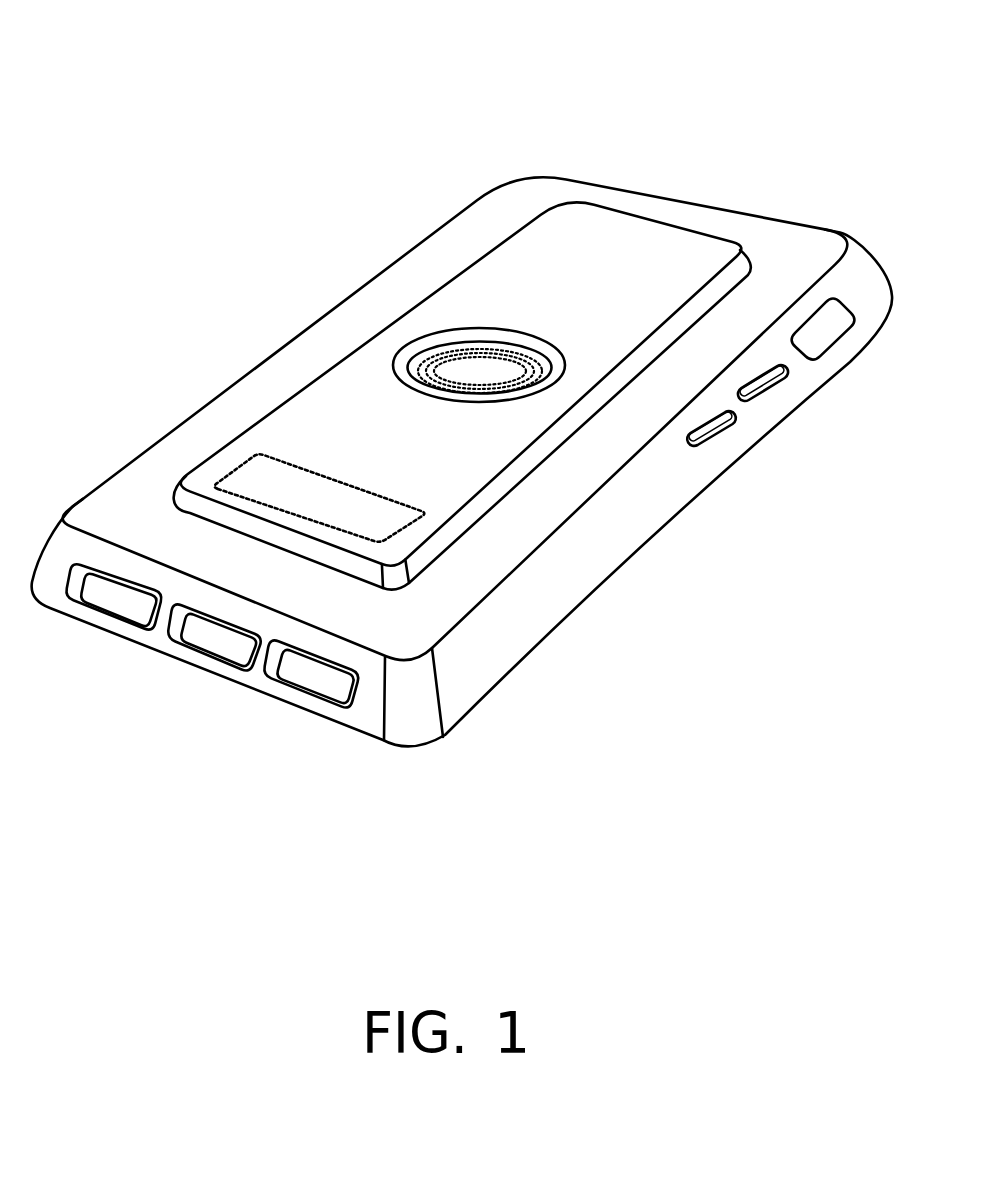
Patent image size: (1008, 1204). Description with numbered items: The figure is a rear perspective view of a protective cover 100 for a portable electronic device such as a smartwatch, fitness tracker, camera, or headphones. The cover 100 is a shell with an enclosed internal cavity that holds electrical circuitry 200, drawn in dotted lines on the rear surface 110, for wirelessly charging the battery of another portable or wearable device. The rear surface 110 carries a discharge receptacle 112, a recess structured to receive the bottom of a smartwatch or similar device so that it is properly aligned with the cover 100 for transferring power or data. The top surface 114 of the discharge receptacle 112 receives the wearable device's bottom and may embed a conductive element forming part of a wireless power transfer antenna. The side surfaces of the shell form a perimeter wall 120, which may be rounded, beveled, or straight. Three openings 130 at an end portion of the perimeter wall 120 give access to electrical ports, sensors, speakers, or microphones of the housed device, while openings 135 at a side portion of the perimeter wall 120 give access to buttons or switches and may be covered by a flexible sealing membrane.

The protective cover 100 is at (488, 46).
The rear surface 110 is at (533, 277).
The discharge receptacle 112 is at (465, 335).
The top surface of the discharge receptacle 114 is at (457, 378).
The perimeter wall 120 is at (365, 700).
The openings 130 is at (307, 672).
The openings 135 is at (823, 337).
The electrical circuitry 200 is at (288, 477).